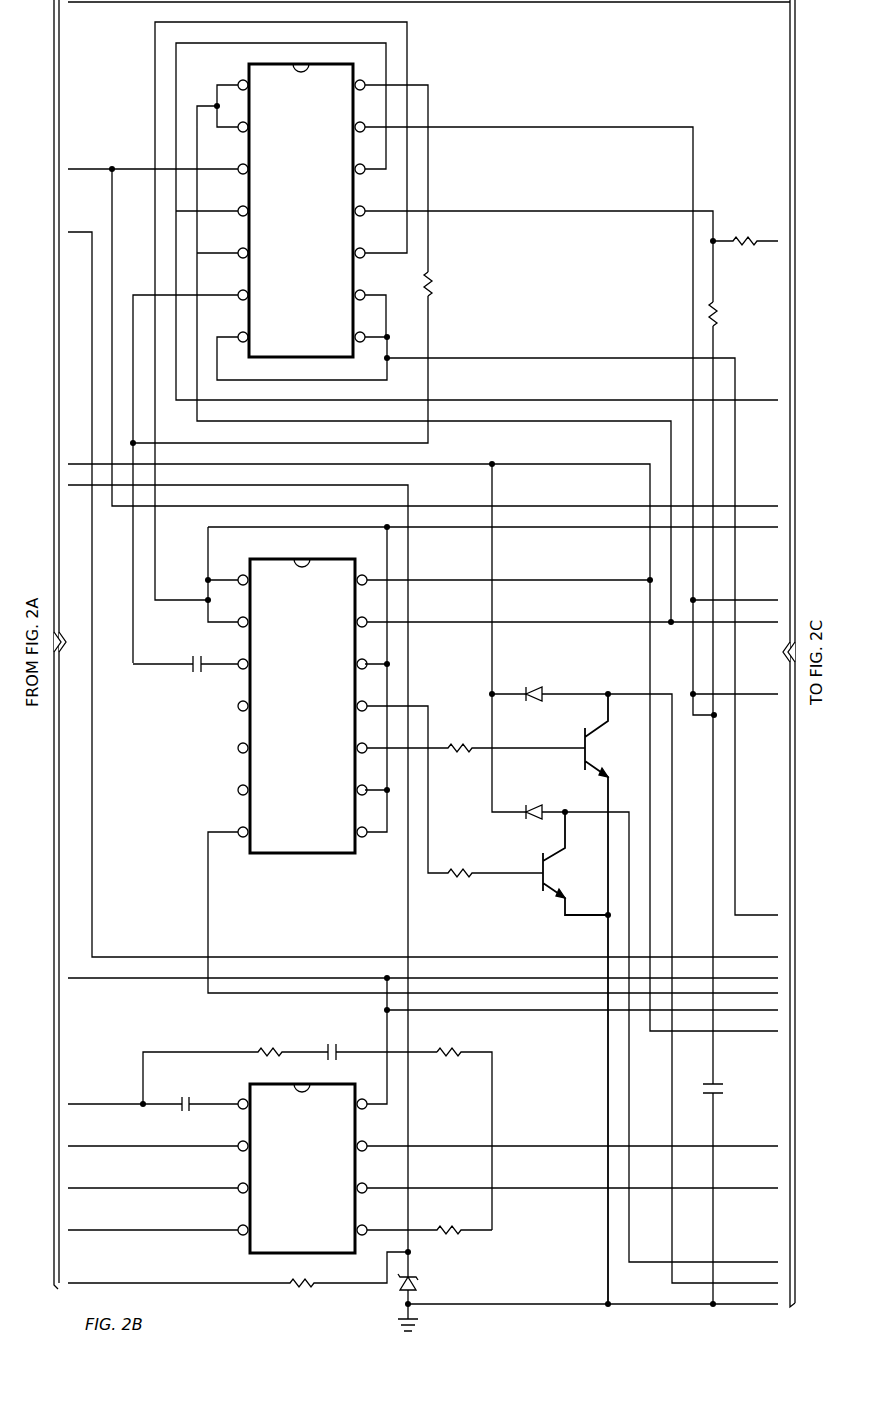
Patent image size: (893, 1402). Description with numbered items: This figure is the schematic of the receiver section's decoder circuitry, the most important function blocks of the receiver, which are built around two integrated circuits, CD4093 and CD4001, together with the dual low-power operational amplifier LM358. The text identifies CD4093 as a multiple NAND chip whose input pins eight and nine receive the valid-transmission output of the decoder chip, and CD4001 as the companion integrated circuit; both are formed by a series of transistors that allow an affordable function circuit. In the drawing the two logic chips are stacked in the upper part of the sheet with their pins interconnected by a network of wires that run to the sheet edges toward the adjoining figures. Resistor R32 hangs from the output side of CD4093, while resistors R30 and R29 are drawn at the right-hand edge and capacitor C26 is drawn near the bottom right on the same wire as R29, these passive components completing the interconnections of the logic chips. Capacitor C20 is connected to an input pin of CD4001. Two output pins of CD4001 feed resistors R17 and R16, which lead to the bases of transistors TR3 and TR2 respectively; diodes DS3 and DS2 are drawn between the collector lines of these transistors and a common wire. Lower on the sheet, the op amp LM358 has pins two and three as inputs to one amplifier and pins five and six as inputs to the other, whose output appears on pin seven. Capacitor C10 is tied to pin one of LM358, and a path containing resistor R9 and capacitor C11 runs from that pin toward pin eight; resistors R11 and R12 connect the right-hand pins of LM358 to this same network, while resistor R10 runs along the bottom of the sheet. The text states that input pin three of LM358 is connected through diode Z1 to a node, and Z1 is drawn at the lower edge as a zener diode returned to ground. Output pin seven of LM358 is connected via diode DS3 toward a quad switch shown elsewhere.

The multiple NAND chip CD4093 is at (301, 210).
The integrated circuit CD4001 is at (302, 706).
The dual low-power operational amplifier LM358 is at (302, 1168).
The resistor R32 is at (446, 284).
The resistor R30 is at (745, 231).
The resistor R29 is at (732, 314).
The capacitor C20 is at (185, 678).
The resistor R17 is at (476, 738).
The resistor R16 is at (455, 791).
The diode DS3 is at (533, 683).
The diode DS2 is at (533, 801).
The transistor TR3 is at (598, 999).
The transistor TR2 is at (564, 864).
The capacitor C26 is at (731, 1093).
The resistor R9 is at (235, 1065).
The capacitor C11 is at (378, 1040).
The resistor R11 is at (464, 1128).
The capacitor C10 is at (153, 1092).
The resistor R12 is at (429, 1220).
The resistor R10 is at (238, 1282).
The diode Z1 is at (418, 1302).